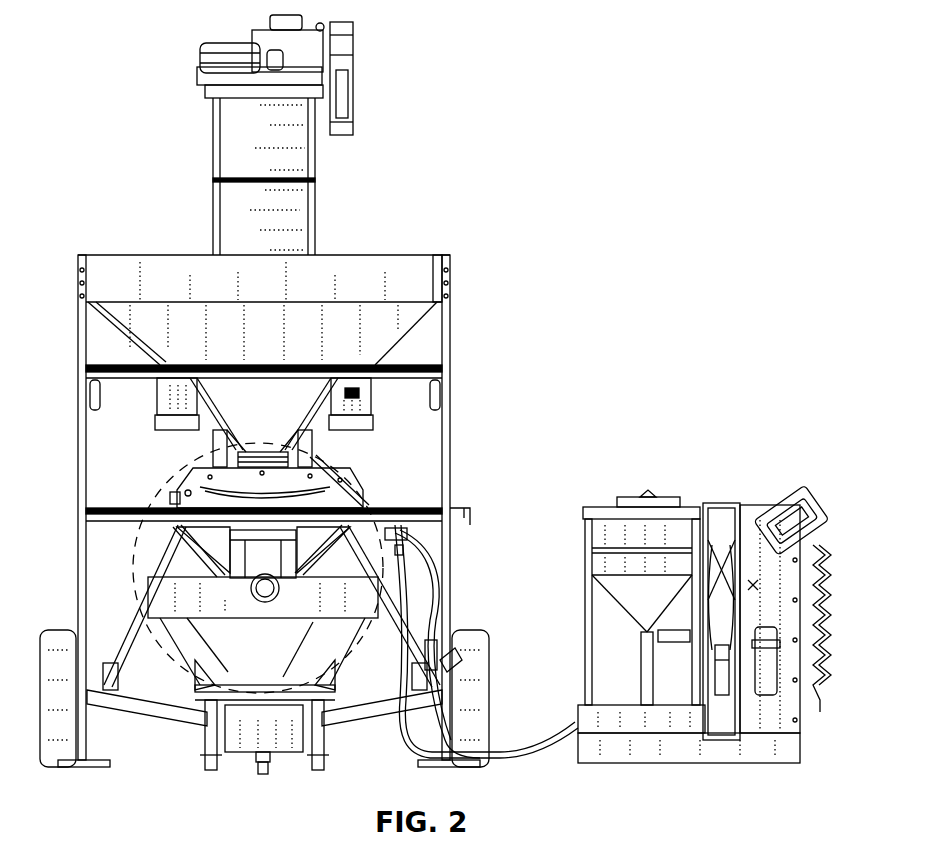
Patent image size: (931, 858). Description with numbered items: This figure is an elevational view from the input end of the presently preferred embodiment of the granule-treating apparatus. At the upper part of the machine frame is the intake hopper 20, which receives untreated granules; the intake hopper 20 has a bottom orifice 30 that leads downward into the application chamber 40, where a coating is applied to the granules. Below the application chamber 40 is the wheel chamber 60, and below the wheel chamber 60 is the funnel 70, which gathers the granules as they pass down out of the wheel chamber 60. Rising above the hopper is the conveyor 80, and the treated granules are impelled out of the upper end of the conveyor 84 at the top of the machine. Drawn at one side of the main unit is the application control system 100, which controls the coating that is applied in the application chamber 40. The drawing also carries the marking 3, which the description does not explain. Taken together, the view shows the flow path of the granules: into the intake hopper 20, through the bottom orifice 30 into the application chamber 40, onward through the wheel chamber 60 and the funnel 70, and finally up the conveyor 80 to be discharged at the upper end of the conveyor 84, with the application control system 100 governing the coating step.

The upper end of the conveyor 84 is at (170, 36).
The conveyor 80 is at (290, 212).
The intake hopper 20 is at (412, 308).
The bottom orifice 30 is at (262, 460).
The application chamber 40 is at (198, 480).
The mixing assembly 3 is at (322, 455).
The wheel chamber 60 is at (160, 602).
The funnel 70 is at (227, 637).
The application control system 100 is at (663, 462).